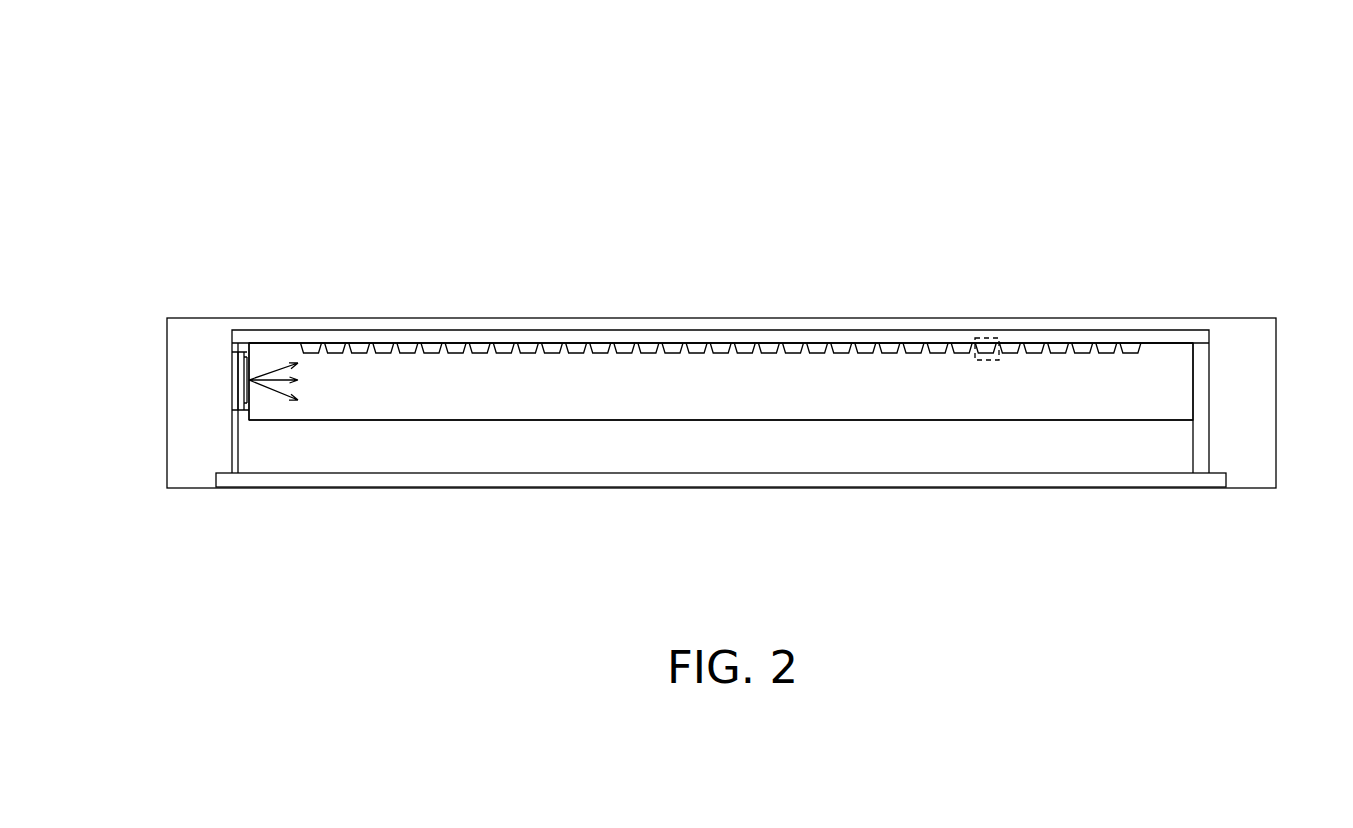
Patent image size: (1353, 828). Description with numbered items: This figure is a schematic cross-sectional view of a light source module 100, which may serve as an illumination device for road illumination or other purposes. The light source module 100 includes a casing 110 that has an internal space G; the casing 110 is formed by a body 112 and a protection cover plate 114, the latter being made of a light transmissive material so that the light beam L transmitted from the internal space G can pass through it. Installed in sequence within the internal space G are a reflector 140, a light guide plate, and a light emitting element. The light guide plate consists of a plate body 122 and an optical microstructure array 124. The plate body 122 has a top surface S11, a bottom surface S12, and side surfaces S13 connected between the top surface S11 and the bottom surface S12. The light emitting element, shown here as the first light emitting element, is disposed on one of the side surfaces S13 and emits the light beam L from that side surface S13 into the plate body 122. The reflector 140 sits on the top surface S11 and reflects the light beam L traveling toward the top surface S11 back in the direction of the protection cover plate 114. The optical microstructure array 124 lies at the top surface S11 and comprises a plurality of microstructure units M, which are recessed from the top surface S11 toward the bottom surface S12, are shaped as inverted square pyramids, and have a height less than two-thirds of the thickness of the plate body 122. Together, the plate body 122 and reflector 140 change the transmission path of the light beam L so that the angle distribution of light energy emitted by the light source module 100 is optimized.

The light source module 100 is at (1293, 621).
The casing 110 is at (1291, 70).
The body 112 is at (203, 328).
The protection cover plate 114 is at (422, 478).
The plate body 122 is at (1178, 357).
The optical microstructure array 124 is at (1141, 351).
The reflector 140 is at (700, 336).
The microstructure units M is at (987, 338).
The light beam L is at (289, 385).
The top surface S11 is at (265, 334).
The bottom surface S12 is at (296, 430).
The side surfaces S13 is at (239, 422).
The internal space G is at (1174, 449).